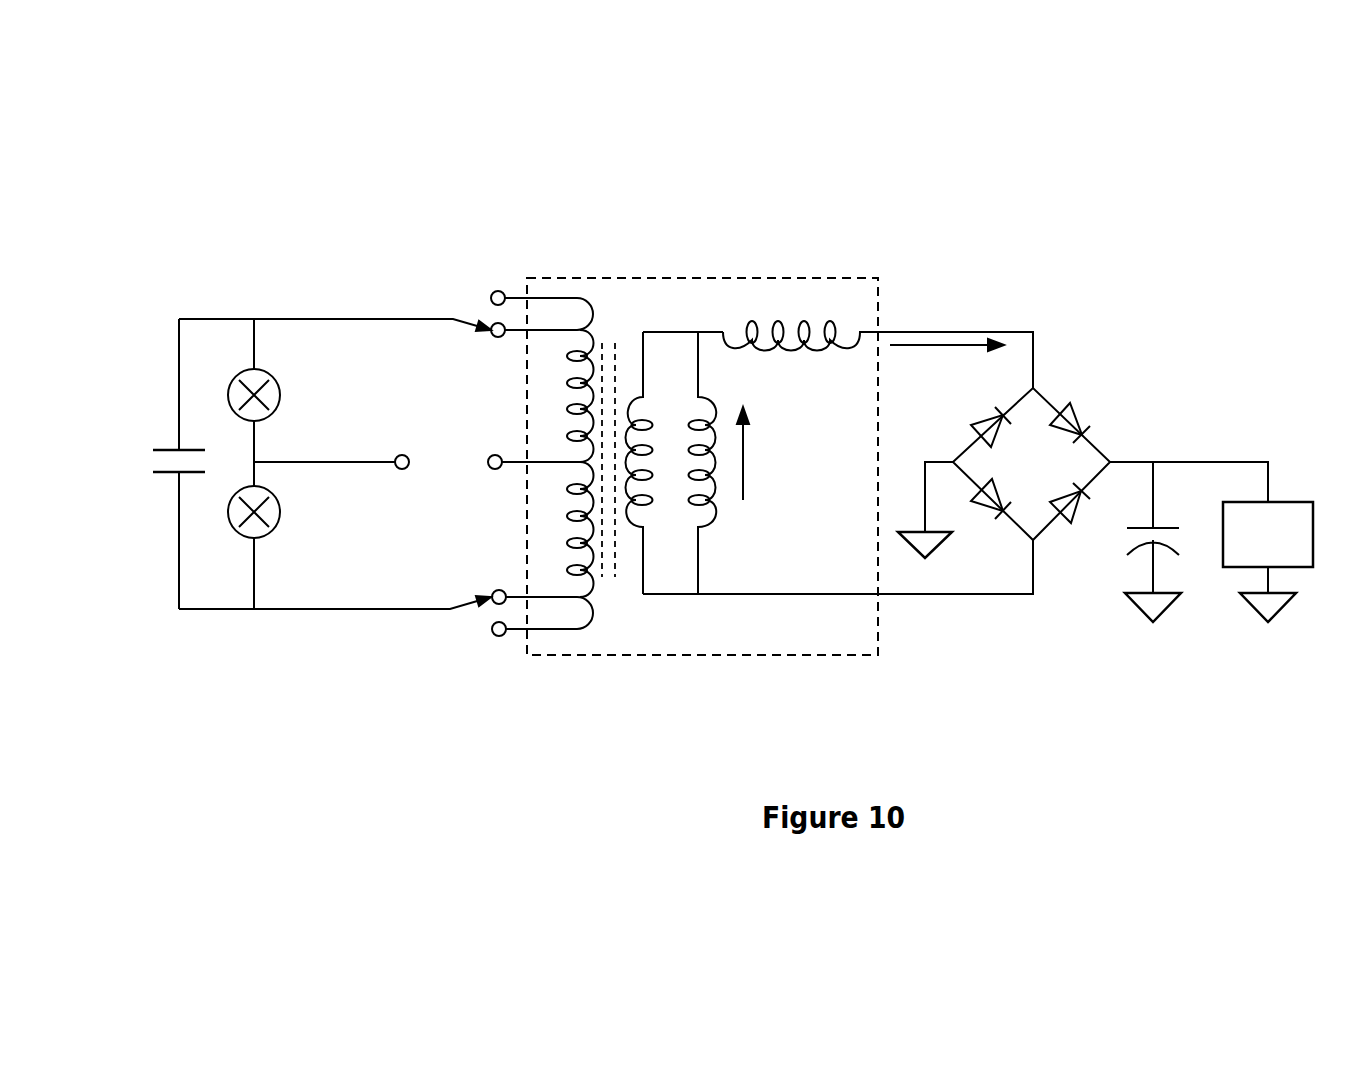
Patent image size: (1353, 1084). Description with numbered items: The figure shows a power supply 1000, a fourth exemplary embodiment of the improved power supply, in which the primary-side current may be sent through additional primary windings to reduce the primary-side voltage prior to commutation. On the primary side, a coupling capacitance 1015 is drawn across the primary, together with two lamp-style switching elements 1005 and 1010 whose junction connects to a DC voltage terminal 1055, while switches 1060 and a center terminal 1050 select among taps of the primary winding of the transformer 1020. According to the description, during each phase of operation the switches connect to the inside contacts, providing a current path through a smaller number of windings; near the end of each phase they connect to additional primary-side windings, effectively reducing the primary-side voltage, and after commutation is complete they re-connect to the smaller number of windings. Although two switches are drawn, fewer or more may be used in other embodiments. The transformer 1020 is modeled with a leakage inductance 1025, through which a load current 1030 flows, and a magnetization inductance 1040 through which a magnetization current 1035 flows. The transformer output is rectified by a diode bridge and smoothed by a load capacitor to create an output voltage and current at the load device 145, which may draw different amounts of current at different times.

The power supply 1000 is at (802, 173).
The lamp A 1005 is at (287, 390).
The lamp B 1010 is at (288, 515).
The coupling capacitor Cc 1015 is at (147, 398).
The transformer 1020 is at (635, 270).
The leakage inductance 1025 is at (817, 323).
The load current output line 1030 is at (955, 340).
The magnetizing current 1035 is at (783, 453).
The magnetizing inductance 1040 is at (772, 560).
The switch terminal 1050 is at (490, 453).
The switches 1055 is at (402, 477).
The switch 1060 is at (465, 307).
The load device 145 is at (1248, 551).